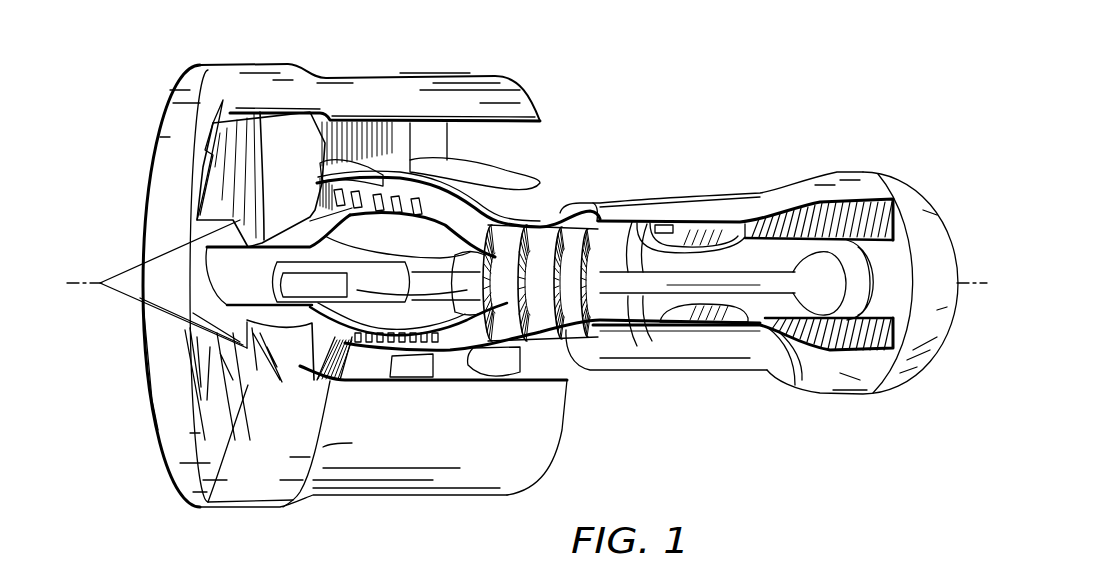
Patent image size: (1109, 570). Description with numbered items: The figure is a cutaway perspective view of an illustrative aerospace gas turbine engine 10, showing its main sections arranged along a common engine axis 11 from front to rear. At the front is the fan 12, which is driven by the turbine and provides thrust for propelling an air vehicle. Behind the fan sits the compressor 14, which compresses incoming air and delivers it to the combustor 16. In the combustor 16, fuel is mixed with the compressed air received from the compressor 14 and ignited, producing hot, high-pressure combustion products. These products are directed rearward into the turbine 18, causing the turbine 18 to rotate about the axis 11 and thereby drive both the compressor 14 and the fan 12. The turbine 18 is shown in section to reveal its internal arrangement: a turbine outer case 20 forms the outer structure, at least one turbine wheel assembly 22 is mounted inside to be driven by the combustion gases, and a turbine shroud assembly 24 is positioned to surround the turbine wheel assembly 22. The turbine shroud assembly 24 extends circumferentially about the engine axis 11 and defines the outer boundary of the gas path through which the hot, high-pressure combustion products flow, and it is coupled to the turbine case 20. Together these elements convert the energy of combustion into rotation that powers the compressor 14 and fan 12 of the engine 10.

The gas turbine engine 10 is at (881, 83).
The axis 11 is at (94, 282).
The fan 12 is at (192, 173).
The compressor 14 is at (541, 215).
The combustor 16 is at (703, 230).
The turbine 18 is at (787, 215).
The turbine outer case 20 is at (813, 190).
The turbine wheel assembly 22 is at (765, 325).
The turbine shroud assembly 24 is at (753, 333).